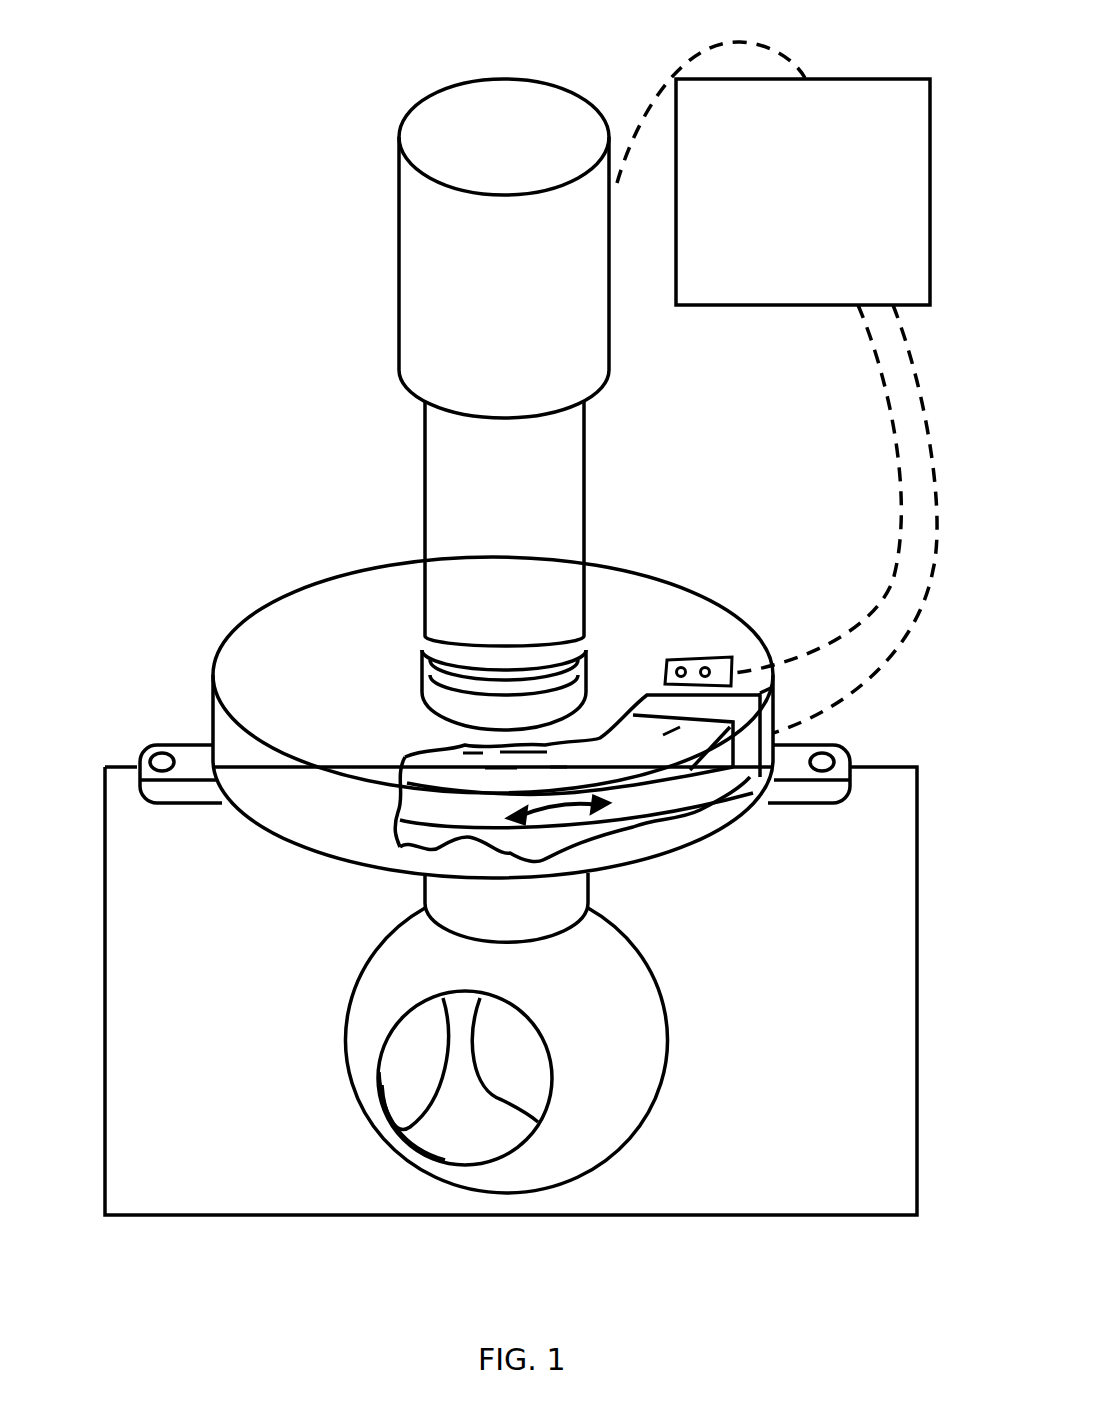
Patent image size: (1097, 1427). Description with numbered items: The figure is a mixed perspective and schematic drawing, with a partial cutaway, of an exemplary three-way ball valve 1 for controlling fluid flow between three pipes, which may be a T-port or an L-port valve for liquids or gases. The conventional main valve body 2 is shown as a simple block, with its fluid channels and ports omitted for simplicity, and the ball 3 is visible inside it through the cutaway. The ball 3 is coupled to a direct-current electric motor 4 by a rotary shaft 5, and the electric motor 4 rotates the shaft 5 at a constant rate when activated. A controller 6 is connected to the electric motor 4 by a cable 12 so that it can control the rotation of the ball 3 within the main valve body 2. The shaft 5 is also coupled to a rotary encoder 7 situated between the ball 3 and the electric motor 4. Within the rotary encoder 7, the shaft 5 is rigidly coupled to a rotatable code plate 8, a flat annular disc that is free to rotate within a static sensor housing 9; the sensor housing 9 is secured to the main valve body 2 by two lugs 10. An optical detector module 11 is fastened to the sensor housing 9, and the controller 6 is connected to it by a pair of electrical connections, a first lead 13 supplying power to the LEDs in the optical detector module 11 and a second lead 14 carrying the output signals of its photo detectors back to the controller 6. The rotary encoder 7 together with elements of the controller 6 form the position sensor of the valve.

The three-way ball valve 1 is at (145, 150).
The main valve body 2 is at (300, 1215).
The ball 3 is at (345, 1031).
The direct-current electric motor 4 is at (398, 226).
The rotary shaft 5 is at (425, 466).
The controller 6 is at (868, 79).
The rotary encoder 7 is at (153, 633).
The code plate 8 is at (690, 780).
The sensor housing 9 is at (317, 575).
The lugs 10 is at (137, 762).
The optical detector module 11 is at (715, 658).
The cable 12 is at (665, 68).
The first lead 13 is at (897, 492).
The second lead 14 is at (914, 360).